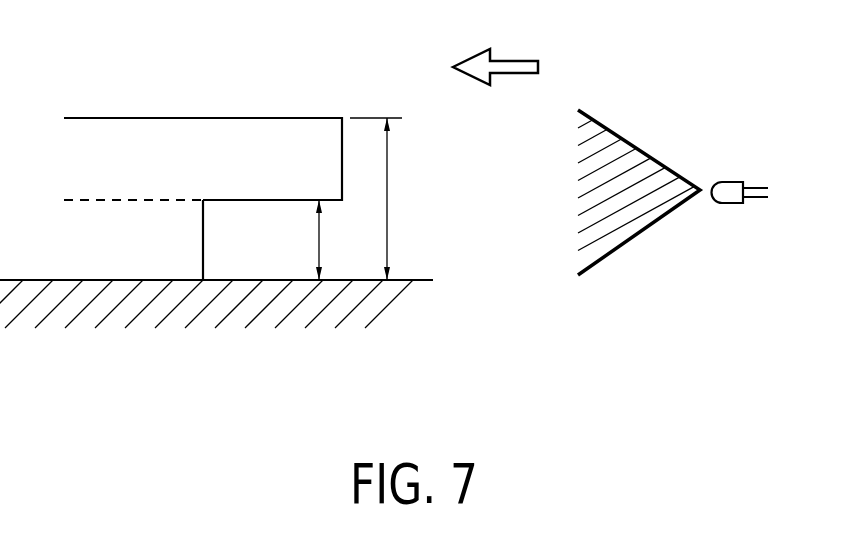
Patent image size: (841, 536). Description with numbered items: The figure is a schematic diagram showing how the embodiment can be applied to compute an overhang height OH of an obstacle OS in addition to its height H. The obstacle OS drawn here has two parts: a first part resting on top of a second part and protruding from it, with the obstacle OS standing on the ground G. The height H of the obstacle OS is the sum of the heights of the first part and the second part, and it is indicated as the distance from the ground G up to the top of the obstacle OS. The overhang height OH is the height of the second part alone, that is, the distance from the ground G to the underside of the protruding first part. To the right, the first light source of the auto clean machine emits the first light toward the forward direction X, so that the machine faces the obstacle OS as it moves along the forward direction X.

The obstacle OS is at (270, 95).
The ground G is at (440, 262).
The height H is at (376, 199).
The overhang height OH is at (297, 240).
The forward direction X is at (495, 52).